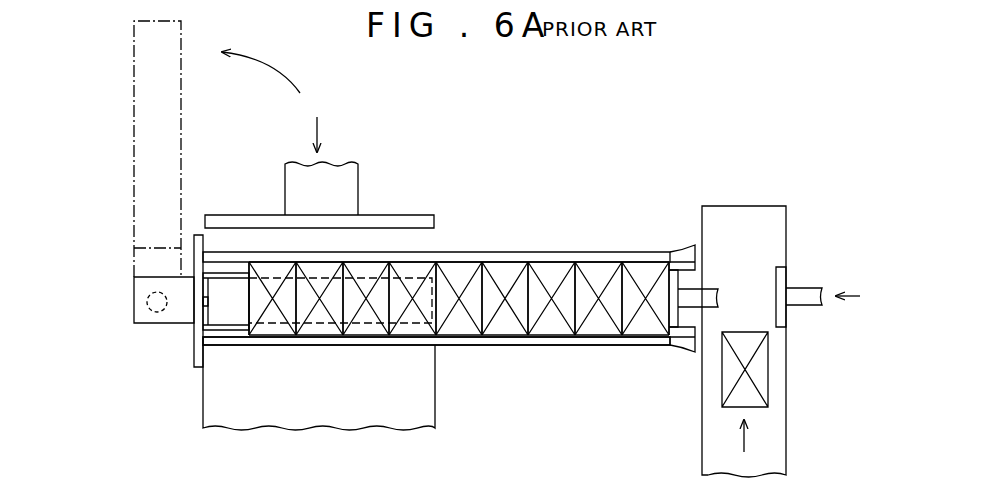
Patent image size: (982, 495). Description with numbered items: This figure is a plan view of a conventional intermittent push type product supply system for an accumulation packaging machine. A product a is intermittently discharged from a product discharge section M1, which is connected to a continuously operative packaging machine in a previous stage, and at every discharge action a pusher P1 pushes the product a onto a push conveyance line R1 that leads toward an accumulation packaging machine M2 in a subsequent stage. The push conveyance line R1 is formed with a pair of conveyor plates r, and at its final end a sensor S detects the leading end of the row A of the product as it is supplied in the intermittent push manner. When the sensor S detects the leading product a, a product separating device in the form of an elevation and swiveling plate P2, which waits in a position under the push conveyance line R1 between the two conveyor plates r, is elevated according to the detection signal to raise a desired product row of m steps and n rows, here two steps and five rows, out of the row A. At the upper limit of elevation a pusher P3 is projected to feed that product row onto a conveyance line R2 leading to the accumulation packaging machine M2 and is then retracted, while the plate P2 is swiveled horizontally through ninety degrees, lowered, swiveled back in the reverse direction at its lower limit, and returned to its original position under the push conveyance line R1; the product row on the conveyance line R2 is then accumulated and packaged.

The pusher P3 is at (338, 184).
The product separating device (elevation and swiveling plate) P2 is at (175, 309).
The pusher P1 is at (800, 292).
The sensor S is at (203, 300).
The conveyor plates r is at (224, 265).
The row of the product A is at (493, 289).
The product a is at (601, 272).
The push conveyance line R1 is at (672, 252).
The conveyance line R2 is at (395, 383).
The product discharge section M1 is at (725, 218).
The accumulation packaging machine M2 is at (380, 428).